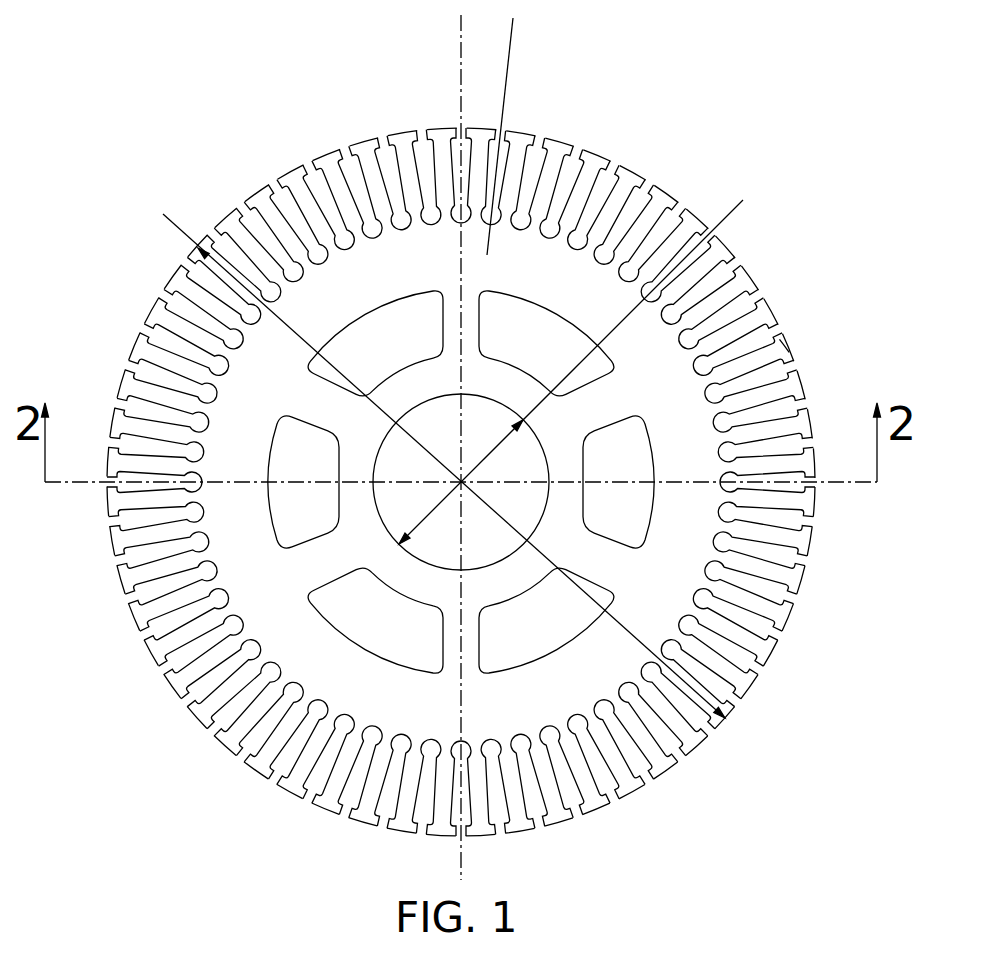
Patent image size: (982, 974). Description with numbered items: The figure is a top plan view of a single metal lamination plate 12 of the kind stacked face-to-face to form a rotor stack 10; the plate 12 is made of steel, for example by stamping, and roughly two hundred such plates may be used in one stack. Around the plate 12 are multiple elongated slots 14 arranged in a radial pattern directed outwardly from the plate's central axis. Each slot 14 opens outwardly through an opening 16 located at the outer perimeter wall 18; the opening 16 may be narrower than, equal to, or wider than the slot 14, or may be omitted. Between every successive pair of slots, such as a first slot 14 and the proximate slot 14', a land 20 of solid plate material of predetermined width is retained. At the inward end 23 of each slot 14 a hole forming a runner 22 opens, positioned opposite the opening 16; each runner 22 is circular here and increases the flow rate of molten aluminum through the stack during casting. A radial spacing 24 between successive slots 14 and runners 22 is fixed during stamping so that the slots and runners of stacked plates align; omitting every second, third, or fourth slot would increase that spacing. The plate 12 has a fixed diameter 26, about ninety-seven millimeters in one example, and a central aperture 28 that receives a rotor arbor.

The rotor stack 10 is at (734, 121).
The metal lamination plate 12 is at (592, 166).
The slot 14 is at (748, 319).
The proximate slot 14' is at (725, 277).
The opening 16 is at (793, 364).
The outer perimeter wall 18 is at (793, 341).
The land 20 is at (740, 327).
The runner 22 is at (783, 387).
The inward end 23 is at (792, 420).
The radial spacing 24 is at (553, 35).
The diameter 26 is at (163, 214).
The central aperture 28 is at (743, 200).